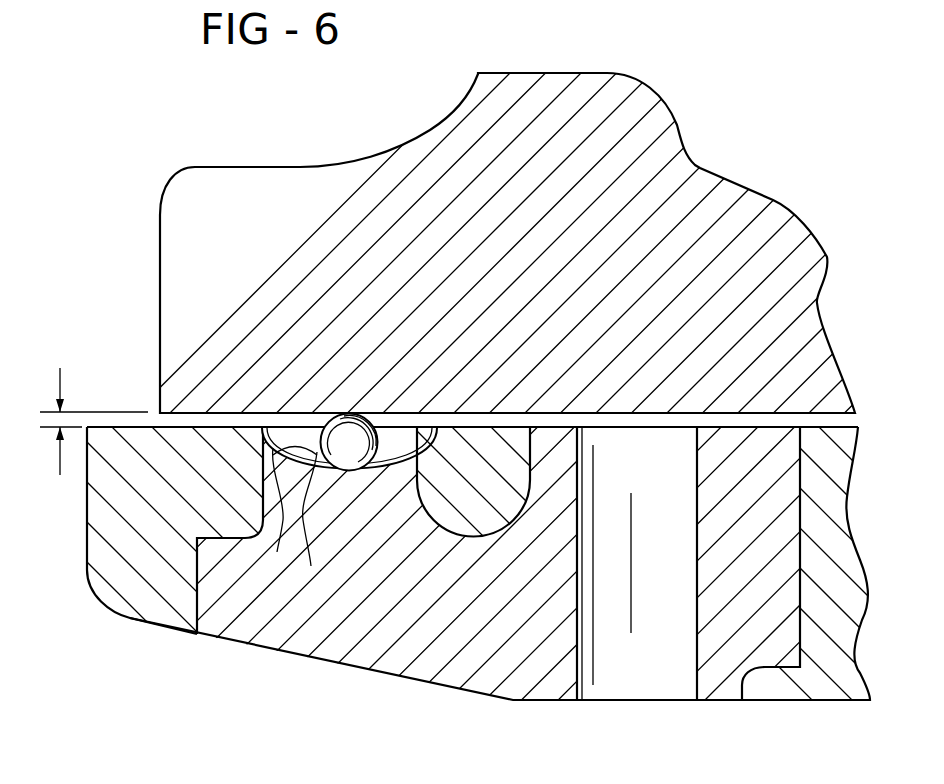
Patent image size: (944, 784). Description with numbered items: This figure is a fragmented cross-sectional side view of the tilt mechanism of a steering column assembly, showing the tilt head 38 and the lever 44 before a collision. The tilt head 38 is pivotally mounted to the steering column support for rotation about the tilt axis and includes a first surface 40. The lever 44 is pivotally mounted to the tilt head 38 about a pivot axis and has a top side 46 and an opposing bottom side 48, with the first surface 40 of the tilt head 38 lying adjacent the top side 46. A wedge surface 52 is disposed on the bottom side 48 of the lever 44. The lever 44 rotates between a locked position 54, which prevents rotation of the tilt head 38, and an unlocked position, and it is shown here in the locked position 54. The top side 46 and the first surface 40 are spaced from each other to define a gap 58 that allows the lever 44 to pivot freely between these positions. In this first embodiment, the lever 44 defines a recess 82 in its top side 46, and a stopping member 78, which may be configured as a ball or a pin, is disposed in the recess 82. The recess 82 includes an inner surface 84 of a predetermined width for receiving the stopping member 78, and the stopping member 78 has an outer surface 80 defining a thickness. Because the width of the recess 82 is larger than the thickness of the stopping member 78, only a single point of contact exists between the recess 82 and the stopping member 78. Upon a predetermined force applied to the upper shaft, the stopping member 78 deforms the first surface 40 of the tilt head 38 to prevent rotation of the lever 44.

The tilt head 38 is at (662, 145).
The first surface 40 is at (193, 427).
The lever 44 is at (105, 561).
The top side 46 is at (193, 428).
The bottom side 48 is at (545, 702).
The wedge surface 52 is at (392, 673).
The locked position 54 is at (92, 280).
The gap 58 is at (58, 368).
The stopping member 78 is at (347, 423).
The outer surface 80 is at (380, 428).
The recess 82 is at (289, 512).
The inner surface 84 is at (314, 521).